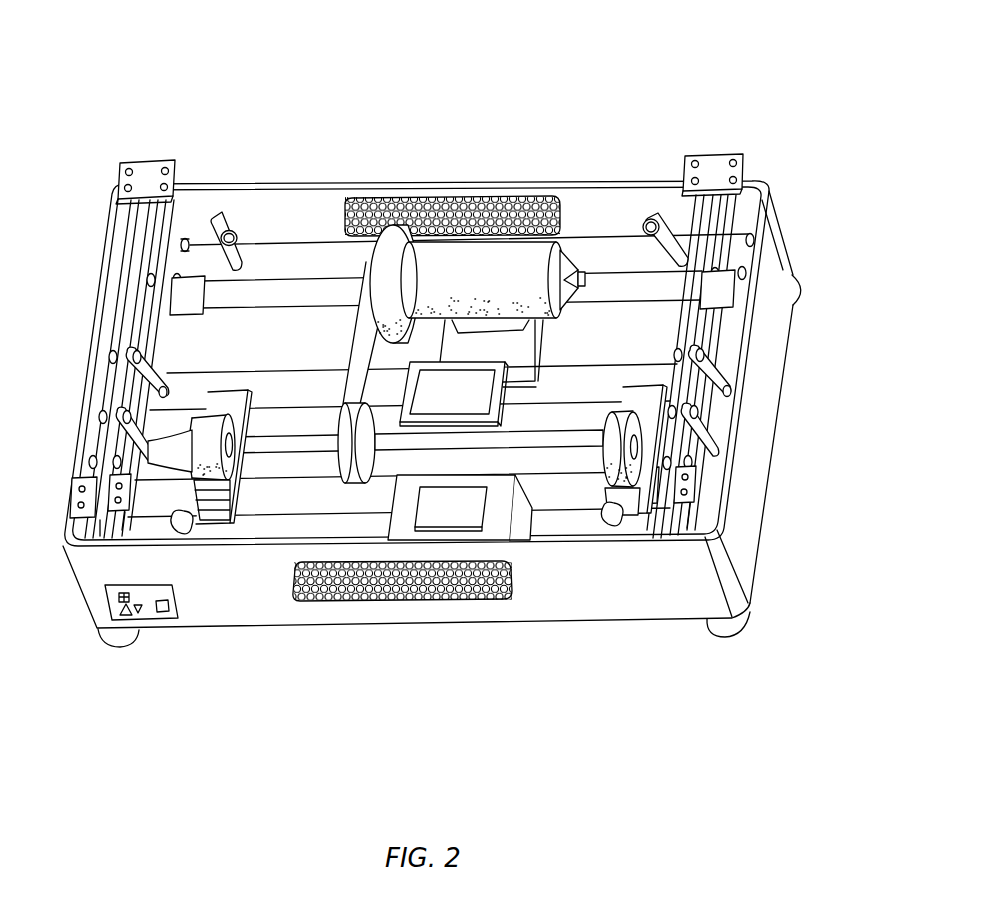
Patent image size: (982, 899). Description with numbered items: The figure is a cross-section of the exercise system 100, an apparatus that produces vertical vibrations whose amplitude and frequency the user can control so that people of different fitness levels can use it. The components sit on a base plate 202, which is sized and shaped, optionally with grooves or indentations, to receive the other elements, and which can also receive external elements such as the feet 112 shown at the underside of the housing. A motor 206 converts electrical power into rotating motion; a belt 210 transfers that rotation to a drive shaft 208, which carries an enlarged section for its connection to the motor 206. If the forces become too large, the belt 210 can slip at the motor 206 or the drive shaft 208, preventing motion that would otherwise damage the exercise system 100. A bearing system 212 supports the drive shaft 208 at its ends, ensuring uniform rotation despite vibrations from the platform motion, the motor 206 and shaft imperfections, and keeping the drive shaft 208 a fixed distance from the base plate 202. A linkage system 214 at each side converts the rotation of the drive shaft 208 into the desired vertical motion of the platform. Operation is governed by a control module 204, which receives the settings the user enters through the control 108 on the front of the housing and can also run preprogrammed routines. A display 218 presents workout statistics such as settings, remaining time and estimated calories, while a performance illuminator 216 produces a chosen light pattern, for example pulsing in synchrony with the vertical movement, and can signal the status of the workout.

The exercise system 100 is at (152, 72).
The control 108 is at (150, 614).
The feet 112 is at (731, 632).
The base plate 202 is at (622, 325).
The control module 204 is at (436, 515).
The motor 206 is at (515, 255).
The drive shaft 208 is at (268, 452).
The belt 210 is at (367, 268).
The bearing system 212 is at (207, 462).
The linkage system 214 is at (158, 313).
The performance illuminator 216 is at (221, 217).
The display 218 is at (473, 402).